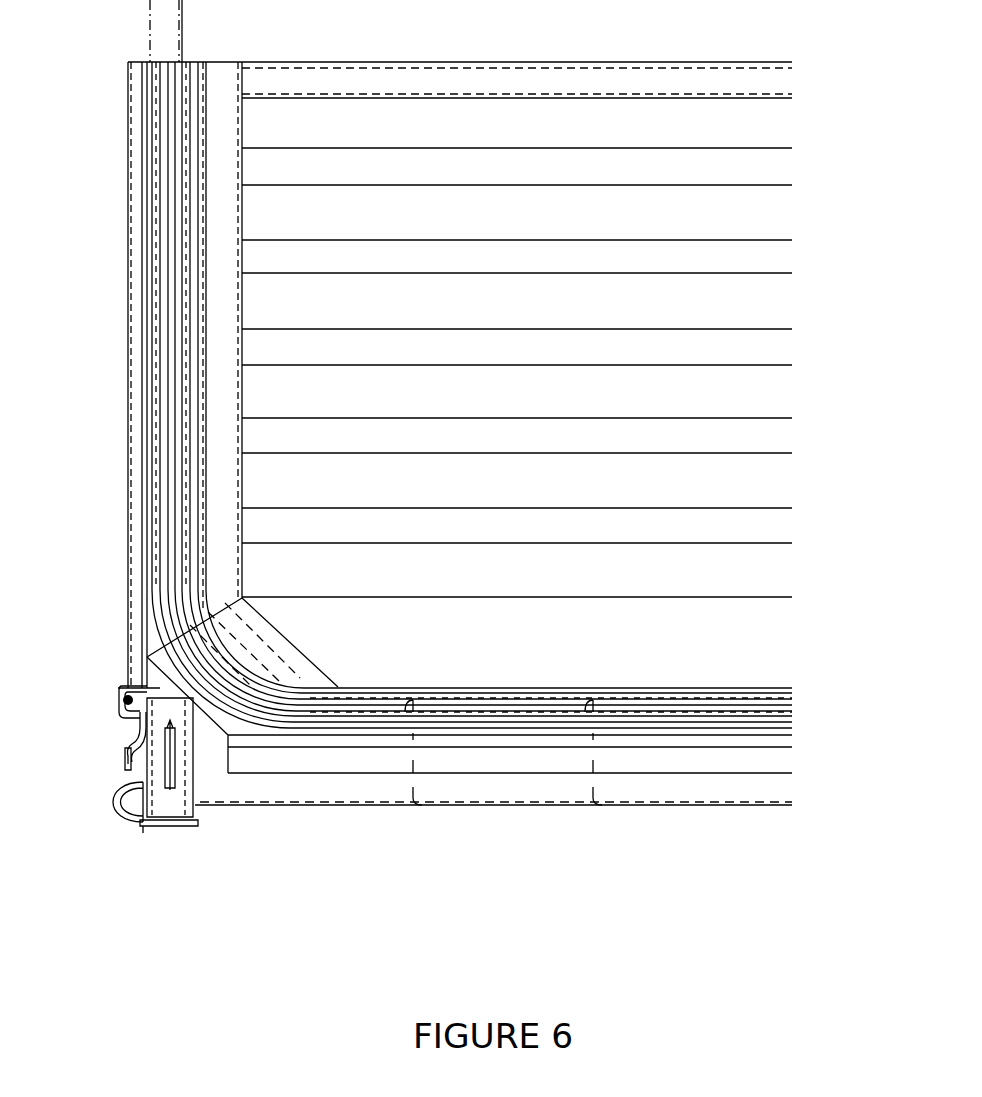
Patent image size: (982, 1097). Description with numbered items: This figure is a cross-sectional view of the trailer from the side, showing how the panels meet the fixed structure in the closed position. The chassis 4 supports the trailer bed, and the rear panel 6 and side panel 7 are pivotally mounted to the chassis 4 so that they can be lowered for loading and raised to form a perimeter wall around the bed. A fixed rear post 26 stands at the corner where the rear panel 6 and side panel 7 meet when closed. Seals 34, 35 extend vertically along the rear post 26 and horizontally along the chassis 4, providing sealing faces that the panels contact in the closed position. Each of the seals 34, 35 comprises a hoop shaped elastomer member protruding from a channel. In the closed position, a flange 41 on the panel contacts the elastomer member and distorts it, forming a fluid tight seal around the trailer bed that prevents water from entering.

The chassis 4 is at (541, 788).
The rear panel 6 is at (140, 306).
The side panel 7 is at (694, 307).
The rear post 26 is at (180, 797).
The seal 34 is at (170, 508).
The seal 35 is at (120, 710).
The flange 41 is at (118, 722).